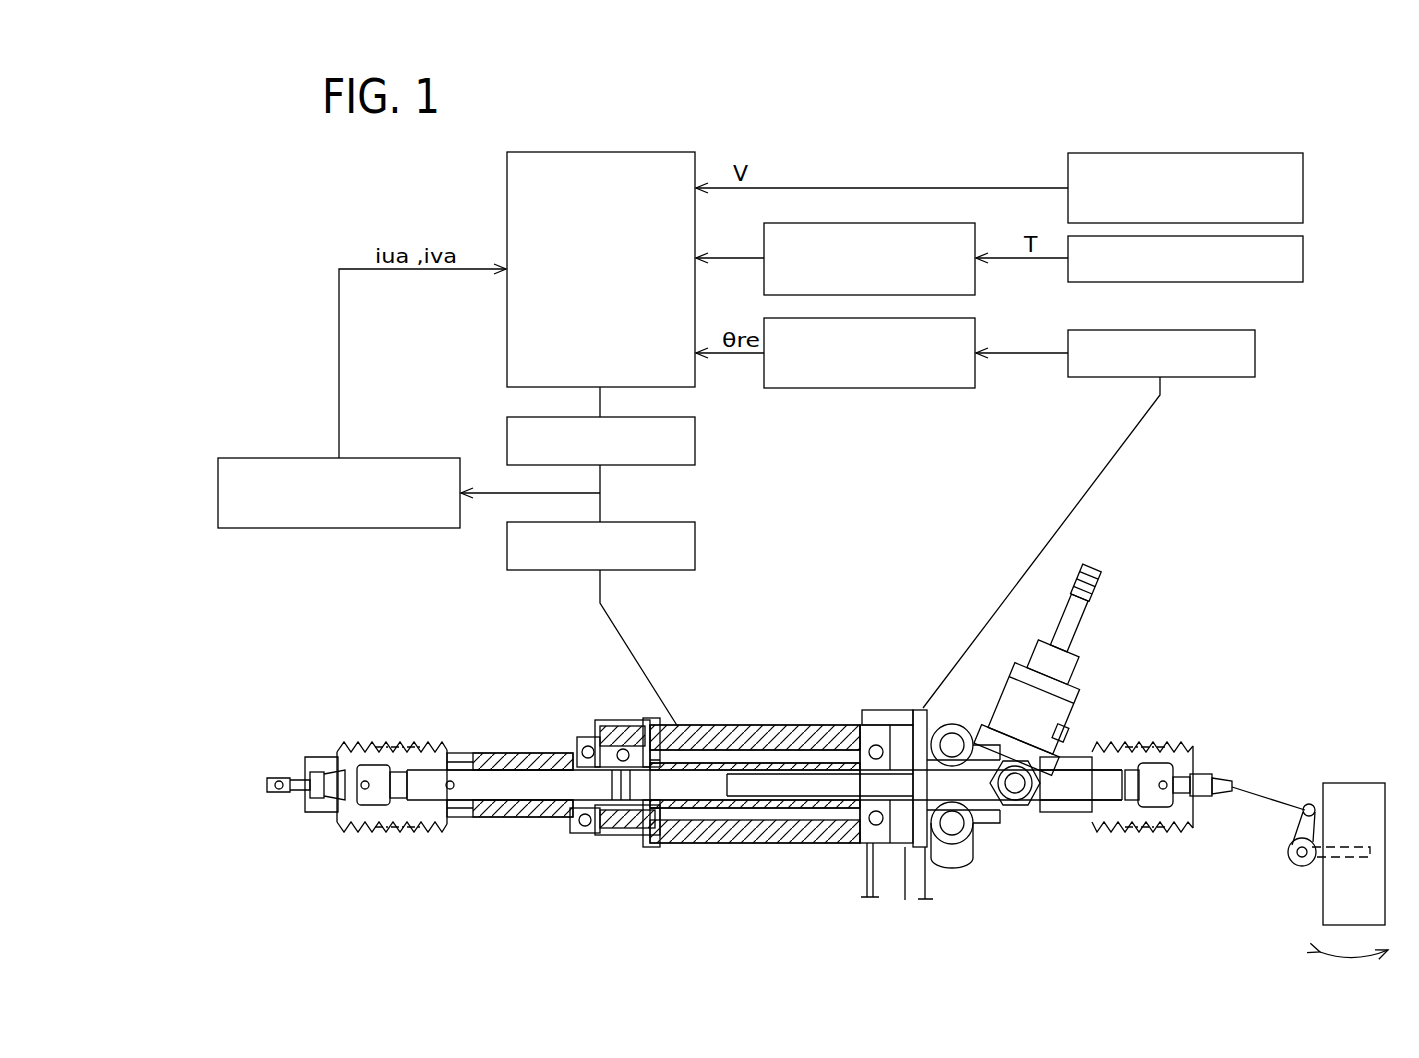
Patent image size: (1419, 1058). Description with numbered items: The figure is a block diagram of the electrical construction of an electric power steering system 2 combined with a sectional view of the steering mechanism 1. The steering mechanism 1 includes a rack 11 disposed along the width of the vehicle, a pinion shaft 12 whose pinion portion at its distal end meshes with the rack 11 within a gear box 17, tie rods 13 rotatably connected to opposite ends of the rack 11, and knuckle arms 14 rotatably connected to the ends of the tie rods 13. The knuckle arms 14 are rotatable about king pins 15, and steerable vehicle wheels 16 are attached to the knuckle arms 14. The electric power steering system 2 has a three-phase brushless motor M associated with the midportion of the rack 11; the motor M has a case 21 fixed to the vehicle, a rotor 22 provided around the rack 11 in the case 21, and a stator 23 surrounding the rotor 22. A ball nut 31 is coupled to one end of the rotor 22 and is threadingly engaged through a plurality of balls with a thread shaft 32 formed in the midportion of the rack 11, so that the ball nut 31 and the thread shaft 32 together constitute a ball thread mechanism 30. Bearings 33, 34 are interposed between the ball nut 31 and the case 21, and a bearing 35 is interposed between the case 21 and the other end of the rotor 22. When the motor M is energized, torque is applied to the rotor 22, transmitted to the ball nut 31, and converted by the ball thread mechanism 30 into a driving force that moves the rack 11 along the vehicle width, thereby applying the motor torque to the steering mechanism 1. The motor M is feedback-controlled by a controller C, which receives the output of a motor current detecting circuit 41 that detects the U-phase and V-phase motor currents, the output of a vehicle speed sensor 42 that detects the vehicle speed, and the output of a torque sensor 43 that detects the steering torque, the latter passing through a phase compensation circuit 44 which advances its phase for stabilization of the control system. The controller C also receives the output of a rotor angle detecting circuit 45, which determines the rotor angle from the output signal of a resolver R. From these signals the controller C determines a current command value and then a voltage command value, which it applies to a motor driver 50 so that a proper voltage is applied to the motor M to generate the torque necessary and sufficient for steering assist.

The steering mechanism 1 is at (1014, 876).
The electric power steering system 2 is at (539, 649).
The rack 11 is at (757, 793).
The pinion shaft 12 is at (1082, 626).
The tie rods 13 is at (1265, 795).
The knuckle arms 14 is at (1299, 824).
The king pins 15 is at (1290, 863).
The steerable vehicle wheels 16 is at (1345, 788).
The gear box 17 is at (1067, 743).
The case 21 is at (775, 733).
The rotor 22 is at (812, 732).
The stator 23 is at (808, 742).
The ball thread mechanism 30 is at (578, 915).
The ball nut 31 is at (587, 830).
The thread shaft 32 is at (573, 787).
The bearing 33 is at (656, 722).
The bearing 34 is at (575, 752).
The bearing 35 is at (867, 767).
The motor current detecting circuit 41 is at (285, 458).
The vehicle speed sensor 42 is at (1303, 188).
The torque sensor 43 is at (1303, 258).
The phase compensation circuit 44 is at (975, 283).
The rotor angle detecting circuit 45 is at (975, 378).
The motor driver 50 is at (695, 440).
The controller C is at (632, 152).
The motor M is at (695, 545).
The resolver R is at (1255, 353).